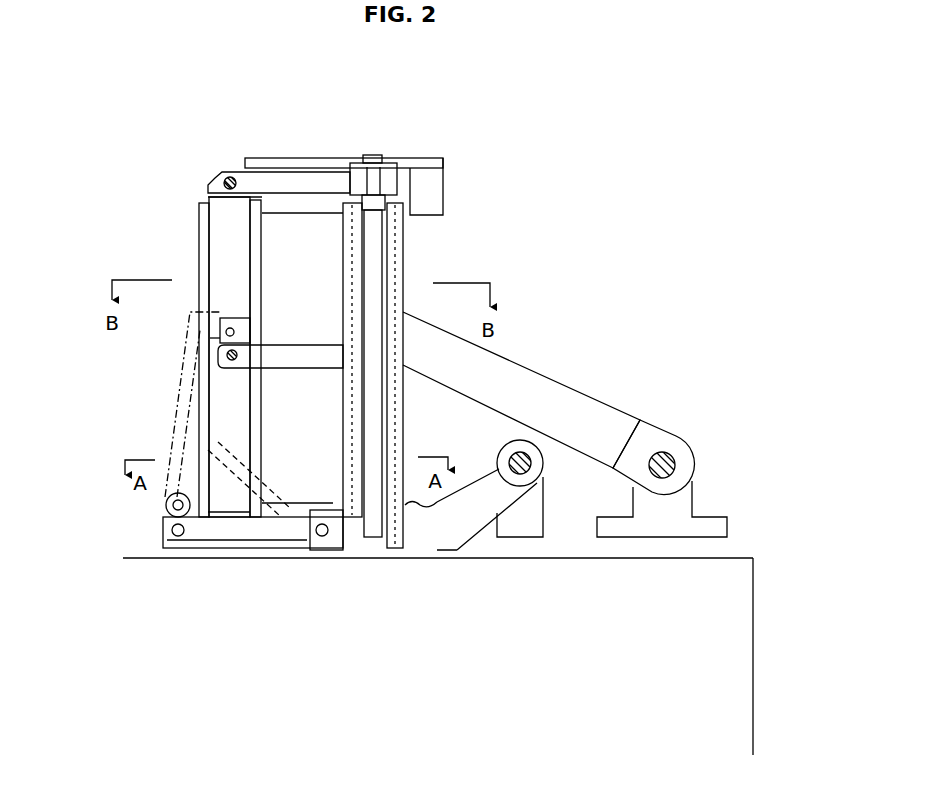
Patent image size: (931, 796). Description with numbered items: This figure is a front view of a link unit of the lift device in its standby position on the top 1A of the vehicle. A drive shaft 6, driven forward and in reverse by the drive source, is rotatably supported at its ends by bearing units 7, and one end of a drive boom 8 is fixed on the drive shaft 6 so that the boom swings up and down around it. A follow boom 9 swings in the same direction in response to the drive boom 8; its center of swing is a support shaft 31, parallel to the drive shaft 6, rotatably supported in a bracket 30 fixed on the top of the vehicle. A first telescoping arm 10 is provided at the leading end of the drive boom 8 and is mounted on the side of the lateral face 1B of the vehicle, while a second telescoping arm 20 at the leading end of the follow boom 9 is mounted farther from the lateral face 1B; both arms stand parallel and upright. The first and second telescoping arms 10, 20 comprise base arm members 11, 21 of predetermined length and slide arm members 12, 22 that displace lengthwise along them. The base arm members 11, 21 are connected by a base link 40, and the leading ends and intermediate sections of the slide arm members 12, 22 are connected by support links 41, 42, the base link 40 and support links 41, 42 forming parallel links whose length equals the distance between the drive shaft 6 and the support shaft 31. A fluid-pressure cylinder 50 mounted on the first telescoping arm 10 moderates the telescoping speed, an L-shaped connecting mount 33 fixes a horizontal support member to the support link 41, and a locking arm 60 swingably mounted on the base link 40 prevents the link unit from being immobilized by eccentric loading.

The top of the vehicle 1A is at (740, 558).
The lateral face of the vehicle 1B is at (753, 665).
The drive shaft 6 is at (670, 453).
The bearing unit 7 is at (652, 540).
The drive boom 8 is at (598, 412).
The follow boom 9 is at (436, 550).
The first telescoping arm 10 is at (505, 218).
The base arm member 11 is at (403, 240).
The slide arm member 12 is at (403, 260).
The second telescoping arm 20 is at (102, 195).
The base arm member 21 is at (198, 220).
The slide arm member 22 is at (213, 258).
The bracket 30 is at (518, 540).
The support shaft 31 is at (523, 453).
The connecting mount 33 is at (458, 170).
The base link 40 is at (238, 548).
The support link 41 is at (305, 172).
The support link 42 is at (305, 343).
The fluid-pressure cylinder 50 is at (365, 545).
The locking arm 60 is at (175, 428).